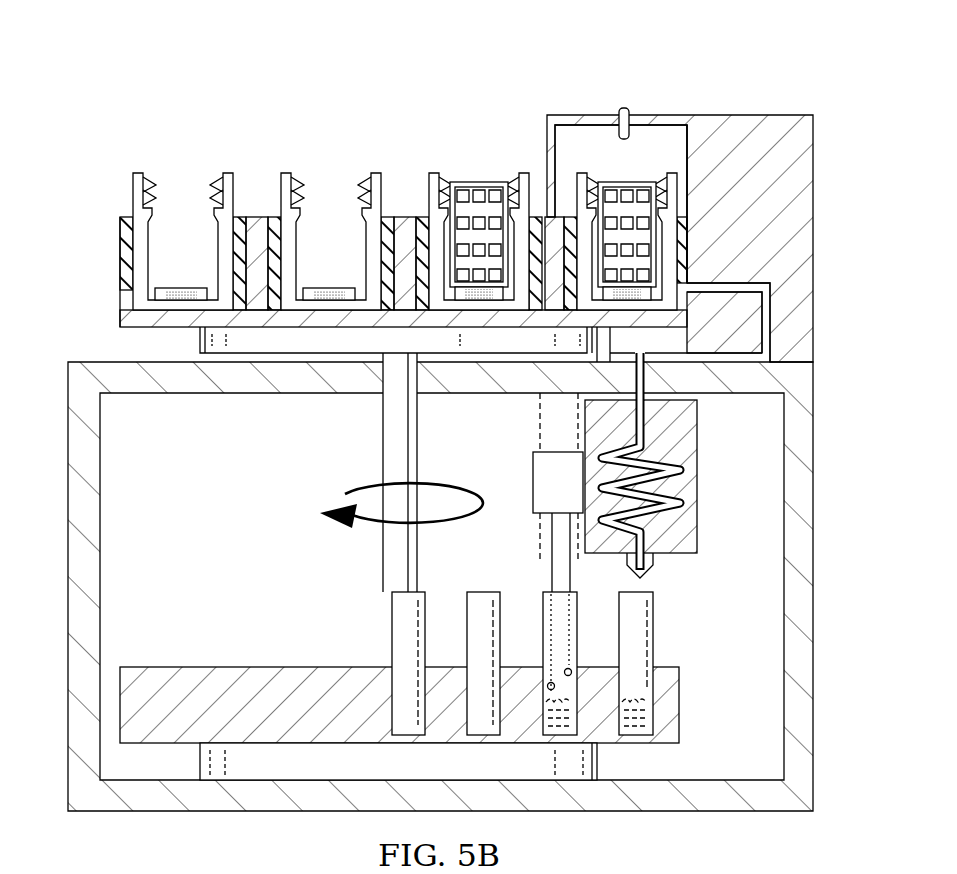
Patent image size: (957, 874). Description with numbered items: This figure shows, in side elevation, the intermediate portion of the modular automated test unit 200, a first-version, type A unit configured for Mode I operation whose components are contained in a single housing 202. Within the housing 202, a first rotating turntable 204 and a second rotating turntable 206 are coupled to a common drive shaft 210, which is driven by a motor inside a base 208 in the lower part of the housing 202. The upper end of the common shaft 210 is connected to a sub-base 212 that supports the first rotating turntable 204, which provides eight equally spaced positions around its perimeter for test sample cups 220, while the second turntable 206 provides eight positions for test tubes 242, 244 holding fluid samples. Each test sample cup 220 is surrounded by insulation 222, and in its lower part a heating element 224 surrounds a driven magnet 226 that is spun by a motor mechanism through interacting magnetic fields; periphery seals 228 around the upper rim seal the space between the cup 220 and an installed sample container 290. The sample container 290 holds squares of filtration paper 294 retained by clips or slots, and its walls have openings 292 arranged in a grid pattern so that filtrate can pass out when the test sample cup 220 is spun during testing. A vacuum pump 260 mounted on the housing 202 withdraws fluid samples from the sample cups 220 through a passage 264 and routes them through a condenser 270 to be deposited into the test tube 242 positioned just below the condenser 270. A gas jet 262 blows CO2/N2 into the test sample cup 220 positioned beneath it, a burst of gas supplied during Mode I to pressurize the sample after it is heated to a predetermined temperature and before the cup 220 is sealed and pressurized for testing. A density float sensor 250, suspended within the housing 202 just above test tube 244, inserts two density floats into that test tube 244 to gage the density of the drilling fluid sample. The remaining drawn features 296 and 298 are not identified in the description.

The modular automated test unit 200 is at (252, 56).
The housing 202 is at (810, 581).
The first rotating turntable 204 is at (257, 226).
The second rotating turntable 206 is at (276, 668).
The base 208 is at (600, 758).
The common drive shaft 210 is at (382, 432).
The sub-base 212 is at (268, 344).
The test sample cup 220 is at (131, 200).
The insulation 222 is at (121, 247).
The heating element 224 is at (330, 288).
The driven magnet 226 is at (181, 288).
The periphery seals 228 is at (151, 184).
The test tube 242 is at (657, 609).
The test tube 244 is at (578, 627).
The density float sensor 250 is at (533, 480).
The vacuum pump 260 is at (805, 203).
The gas jet 262 is at (580, 114).
The passage 264 is at (770, 302).
The condenser 270 is at (689, 517).
The sample container 290 is at (504, 170).
The openings 292 is at (478, 205).
The filtration paper 294 is at (460, 186).
The chamber 296 is at (680, 160).
The plug 298 is at (626, 106).